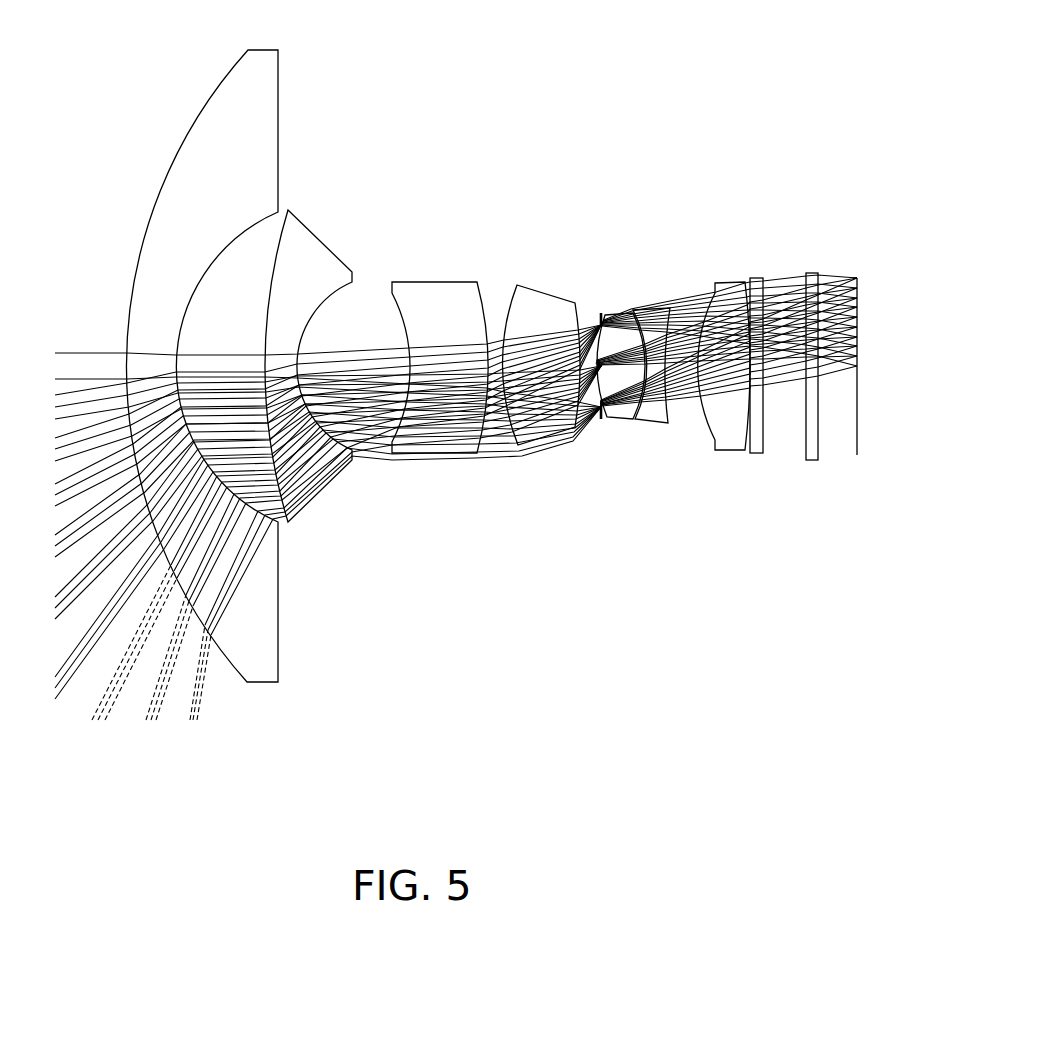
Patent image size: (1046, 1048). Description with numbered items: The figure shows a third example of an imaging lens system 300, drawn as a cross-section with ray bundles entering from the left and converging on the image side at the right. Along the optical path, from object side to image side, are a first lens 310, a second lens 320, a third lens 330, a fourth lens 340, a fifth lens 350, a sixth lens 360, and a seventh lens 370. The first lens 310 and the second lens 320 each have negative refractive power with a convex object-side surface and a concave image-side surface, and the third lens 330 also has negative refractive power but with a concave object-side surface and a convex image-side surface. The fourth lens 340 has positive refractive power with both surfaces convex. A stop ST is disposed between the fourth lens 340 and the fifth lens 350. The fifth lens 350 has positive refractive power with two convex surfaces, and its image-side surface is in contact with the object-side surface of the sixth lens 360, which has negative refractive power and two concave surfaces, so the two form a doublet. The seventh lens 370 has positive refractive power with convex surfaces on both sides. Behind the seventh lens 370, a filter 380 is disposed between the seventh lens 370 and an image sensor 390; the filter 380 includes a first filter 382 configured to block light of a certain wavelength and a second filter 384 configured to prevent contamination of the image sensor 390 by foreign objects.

The imaging lens system 300 is at (540, 122).
The first lens 310 is at (265, 682).
The second lens 320 is at (322, 493).
The third lens 330 is at (438, 448).
The fourth lens 340 is at (547, 438).
The stop ST is at (599, 313).
The fifth lens 350 is at (617, 413).
The sixth lens 360 is at (653, 417).
The seventh lens 370 is at (730, 440).
The filter 380 is at (784, 440).
The first filter 382 is at (757, 453).
The second filter 384 is at (810, 460).
The image sensor 390 is at (855, 450).